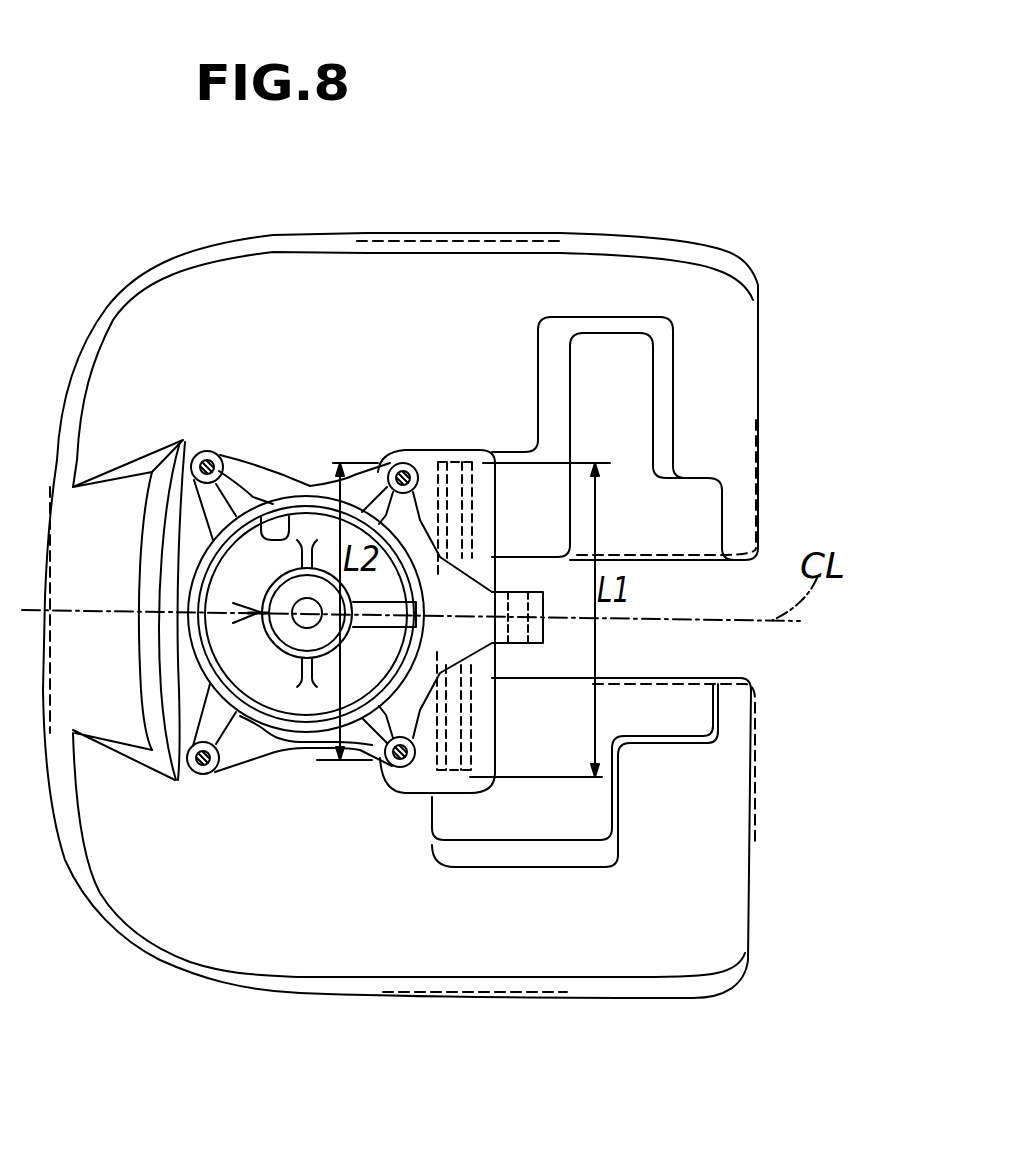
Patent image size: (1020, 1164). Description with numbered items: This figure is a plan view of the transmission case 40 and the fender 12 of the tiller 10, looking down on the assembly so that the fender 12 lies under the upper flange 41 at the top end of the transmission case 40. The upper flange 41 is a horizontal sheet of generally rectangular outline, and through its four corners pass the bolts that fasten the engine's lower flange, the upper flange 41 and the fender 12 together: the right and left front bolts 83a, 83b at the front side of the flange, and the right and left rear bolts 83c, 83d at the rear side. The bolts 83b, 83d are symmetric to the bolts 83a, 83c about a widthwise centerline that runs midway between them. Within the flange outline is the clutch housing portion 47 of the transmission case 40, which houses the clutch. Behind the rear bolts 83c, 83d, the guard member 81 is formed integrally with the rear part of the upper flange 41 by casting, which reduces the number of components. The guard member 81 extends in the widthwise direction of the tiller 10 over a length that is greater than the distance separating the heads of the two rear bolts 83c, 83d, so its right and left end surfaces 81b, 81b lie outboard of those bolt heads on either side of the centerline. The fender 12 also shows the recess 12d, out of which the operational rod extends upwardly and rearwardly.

The tiller 10 is at (695, 138).
The fender 12 is at (543, 240).
The recess 12d is at (703, 678).
The transmission case 40 is at (285, 750).
The upper flange 41 is at (237, 742).
The clutch housing portion 47 is at (290, 520).
The guard member 81 is at (470, 734).
The end surfaces 81b is at (465, 460).
The front bolt 83a is at (203, 766).
The front bolt 83b is at (207, 451).
The rear bolt 83c is at (400, 764).
The rear bolt 83d is at (417, 466).